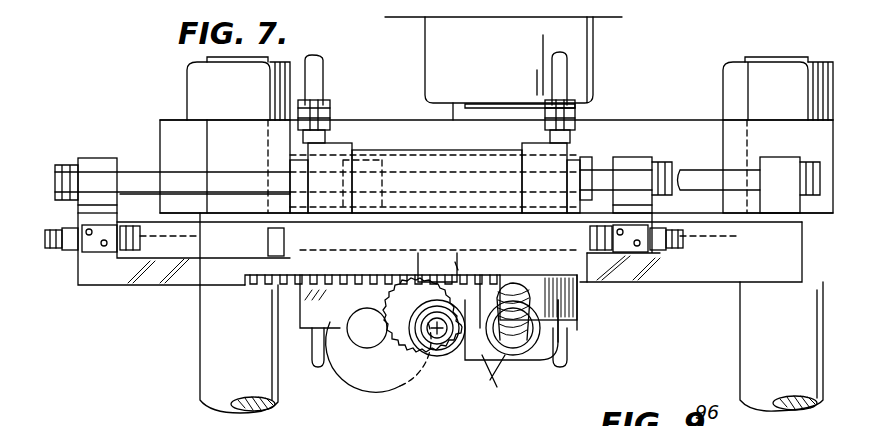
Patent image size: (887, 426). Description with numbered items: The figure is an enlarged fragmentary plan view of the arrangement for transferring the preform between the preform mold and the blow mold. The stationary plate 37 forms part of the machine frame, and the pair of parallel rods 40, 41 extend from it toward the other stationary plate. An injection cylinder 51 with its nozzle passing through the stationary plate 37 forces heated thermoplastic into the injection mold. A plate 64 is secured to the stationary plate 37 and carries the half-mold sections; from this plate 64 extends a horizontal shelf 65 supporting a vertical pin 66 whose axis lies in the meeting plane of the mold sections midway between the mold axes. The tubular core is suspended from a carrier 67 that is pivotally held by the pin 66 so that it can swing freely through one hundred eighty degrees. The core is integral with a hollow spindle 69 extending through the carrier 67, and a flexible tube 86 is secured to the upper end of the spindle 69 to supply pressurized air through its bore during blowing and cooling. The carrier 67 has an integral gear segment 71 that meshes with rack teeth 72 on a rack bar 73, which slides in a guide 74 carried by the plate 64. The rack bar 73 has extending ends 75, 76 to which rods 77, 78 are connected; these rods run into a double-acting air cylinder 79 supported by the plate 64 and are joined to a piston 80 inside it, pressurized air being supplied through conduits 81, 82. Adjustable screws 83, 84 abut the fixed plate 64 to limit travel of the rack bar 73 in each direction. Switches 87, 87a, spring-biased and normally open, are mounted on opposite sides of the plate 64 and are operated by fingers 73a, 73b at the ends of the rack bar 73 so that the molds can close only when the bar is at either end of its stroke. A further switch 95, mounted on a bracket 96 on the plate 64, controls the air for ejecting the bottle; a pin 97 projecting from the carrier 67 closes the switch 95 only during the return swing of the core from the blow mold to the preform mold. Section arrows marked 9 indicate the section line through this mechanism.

The stationary plate 37 is at (170, 123).
The parallel rod 40 is at (740, 357).
The parallel rod 41 is at (214, 375).
The injection cylinder 51 is at (520, 60).
The plate 64 is at (278, 289).
The horizontal shelf 65 is at (579, 332).
The vertical pin 66 is at (414, 364).
The carrier 67 is at (346, 352).
The hollow spindle 69 is at (539, 353).
The gear segment 71 is at (428, 372).
The rack teeth 72 is at (433, 321).
The rack bar 73 is at (181, 278).
The finger 73a is at (99, 252).
The finger 73b is at (621, 252).
The guide 74 is at (574, 289).
The extending end 75 is at (88, 162).
The extending end 76 is at (642, 163).
The rod 77 is at (234, 177).
The rod 78 is at (593, 175).
The double-acting air cylinder 79 is at (477, 158).
The piston 80 is at (382, 167).
The conduit 81 is at (322, 66).
The conduit 82 is at (565, 69).
The adjustable screw 83 is at (53, 252).
The adjustable screw 84 is at (675, 251).
The flexible tube 86 is at (578, 314).
The switch 87 is at (592, 238).
The switch 87a is at (274, 241).
The section line 9- 9 is at (375, 296).
The switch 95 is at (458, 262).
The bracket 96 is at (434, 262).
The pin 97 is at (365, 330).